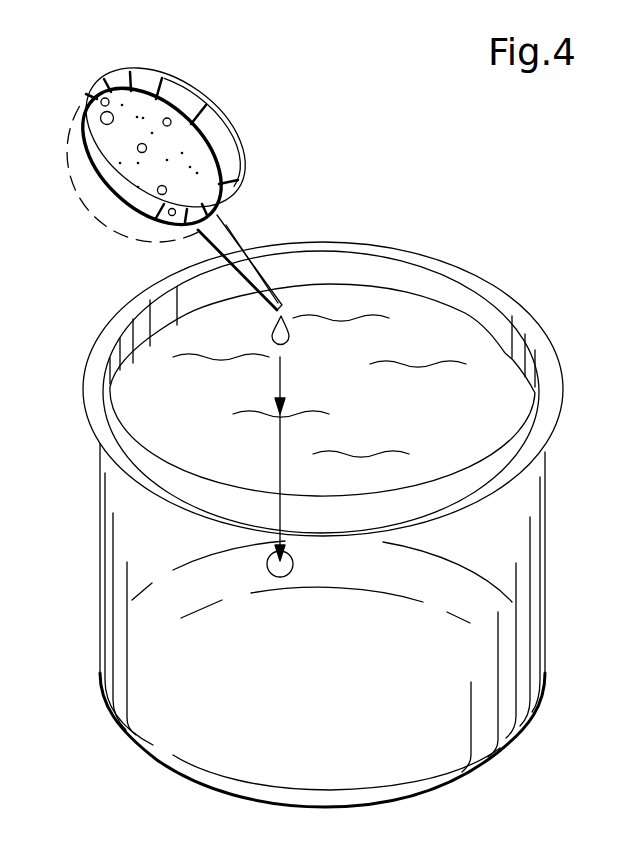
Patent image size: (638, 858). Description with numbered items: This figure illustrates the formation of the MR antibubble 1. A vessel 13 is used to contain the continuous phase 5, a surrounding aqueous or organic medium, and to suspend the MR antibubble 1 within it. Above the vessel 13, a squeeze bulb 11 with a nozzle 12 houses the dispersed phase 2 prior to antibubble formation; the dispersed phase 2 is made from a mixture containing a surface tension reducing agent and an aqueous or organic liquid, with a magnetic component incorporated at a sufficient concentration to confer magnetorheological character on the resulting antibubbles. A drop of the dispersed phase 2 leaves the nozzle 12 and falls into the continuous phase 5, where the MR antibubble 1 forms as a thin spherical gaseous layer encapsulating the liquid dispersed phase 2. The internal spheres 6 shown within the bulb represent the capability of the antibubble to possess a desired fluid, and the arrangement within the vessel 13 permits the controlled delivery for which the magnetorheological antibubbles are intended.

The MR antibubble 1 is at (280, 578).
The dispersed phase 2 is at (164, 147).
The continuous phase 5 is at (412, 403).
The internal spheres 6 is at (114, 120).
The squeeze bulb 11 is at (80, 108).
The nozzle 12 is at (241, 232).
The vessel 13 is at (563, 388).